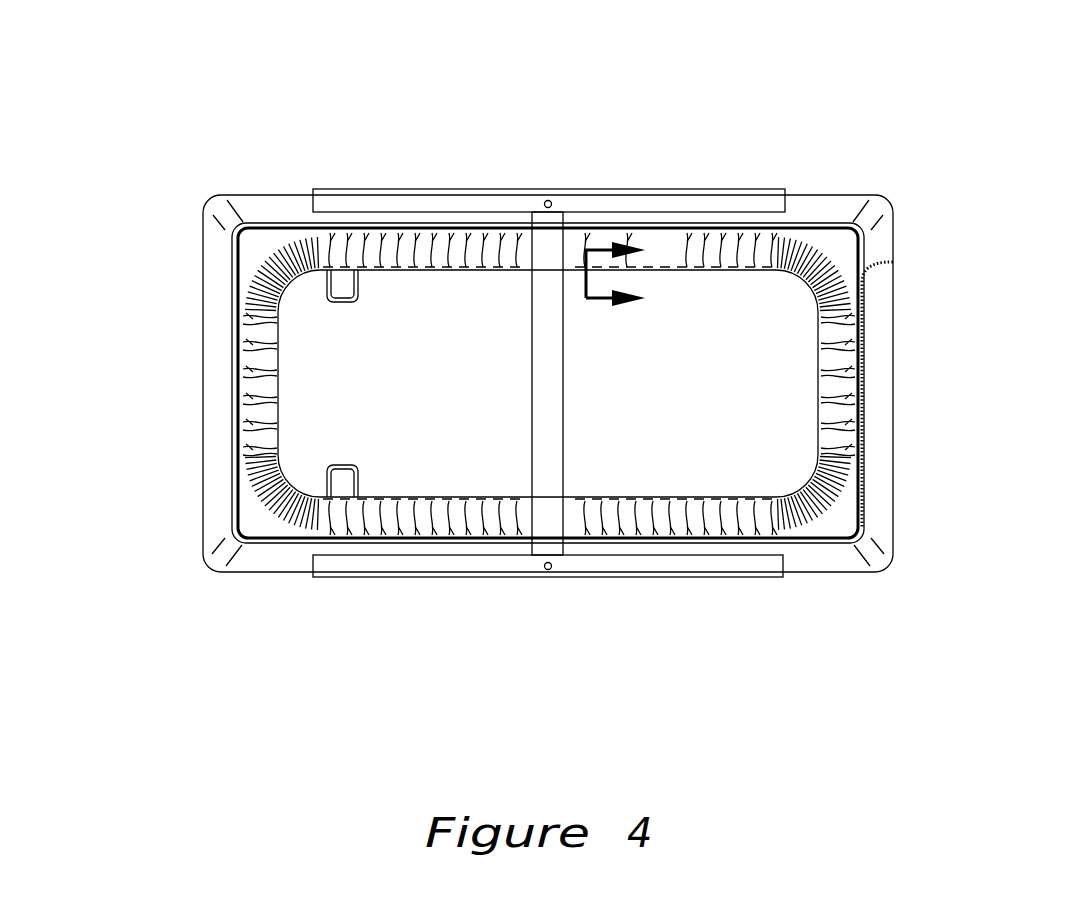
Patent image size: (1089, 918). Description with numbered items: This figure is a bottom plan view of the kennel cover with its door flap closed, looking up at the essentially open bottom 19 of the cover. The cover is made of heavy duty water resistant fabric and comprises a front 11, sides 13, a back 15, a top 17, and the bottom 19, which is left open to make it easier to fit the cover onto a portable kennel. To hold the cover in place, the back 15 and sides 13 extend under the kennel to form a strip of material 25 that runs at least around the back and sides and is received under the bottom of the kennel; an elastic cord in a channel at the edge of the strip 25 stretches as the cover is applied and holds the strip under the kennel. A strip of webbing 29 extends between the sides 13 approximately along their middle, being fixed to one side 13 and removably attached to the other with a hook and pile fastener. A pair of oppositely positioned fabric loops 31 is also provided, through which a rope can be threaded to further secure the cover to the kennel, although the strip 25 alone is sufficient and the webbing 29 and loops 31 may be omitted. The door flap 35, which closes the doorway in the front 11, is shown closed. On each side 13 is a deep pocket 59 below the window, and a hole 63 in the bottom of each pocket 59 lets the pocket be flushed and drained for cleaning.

The front 11 is at (893, 233).
The sides 13 is at (815, 688).
The back 15 is at (203, 382).
The top 17 is at (778, 431).
The bottom 19 is at (262, 252).
The strip of material 25 is at (722, 266).
The strip of webbing 29 is at (564, 380).
The fabric loops 31 is at (360, 290).
The door flap 35 is at (893, 357).
The pocket 59 is at (412, 190).
The hole 63 is at (547, 200).